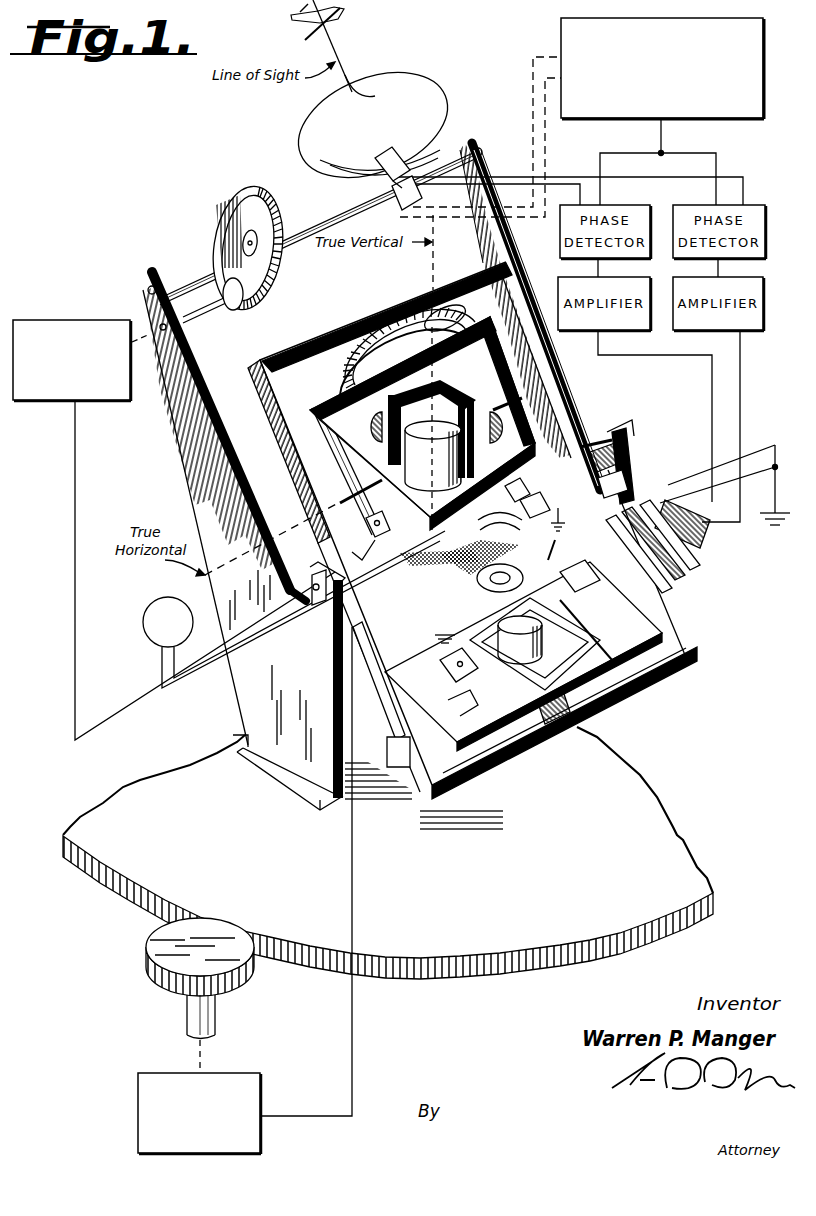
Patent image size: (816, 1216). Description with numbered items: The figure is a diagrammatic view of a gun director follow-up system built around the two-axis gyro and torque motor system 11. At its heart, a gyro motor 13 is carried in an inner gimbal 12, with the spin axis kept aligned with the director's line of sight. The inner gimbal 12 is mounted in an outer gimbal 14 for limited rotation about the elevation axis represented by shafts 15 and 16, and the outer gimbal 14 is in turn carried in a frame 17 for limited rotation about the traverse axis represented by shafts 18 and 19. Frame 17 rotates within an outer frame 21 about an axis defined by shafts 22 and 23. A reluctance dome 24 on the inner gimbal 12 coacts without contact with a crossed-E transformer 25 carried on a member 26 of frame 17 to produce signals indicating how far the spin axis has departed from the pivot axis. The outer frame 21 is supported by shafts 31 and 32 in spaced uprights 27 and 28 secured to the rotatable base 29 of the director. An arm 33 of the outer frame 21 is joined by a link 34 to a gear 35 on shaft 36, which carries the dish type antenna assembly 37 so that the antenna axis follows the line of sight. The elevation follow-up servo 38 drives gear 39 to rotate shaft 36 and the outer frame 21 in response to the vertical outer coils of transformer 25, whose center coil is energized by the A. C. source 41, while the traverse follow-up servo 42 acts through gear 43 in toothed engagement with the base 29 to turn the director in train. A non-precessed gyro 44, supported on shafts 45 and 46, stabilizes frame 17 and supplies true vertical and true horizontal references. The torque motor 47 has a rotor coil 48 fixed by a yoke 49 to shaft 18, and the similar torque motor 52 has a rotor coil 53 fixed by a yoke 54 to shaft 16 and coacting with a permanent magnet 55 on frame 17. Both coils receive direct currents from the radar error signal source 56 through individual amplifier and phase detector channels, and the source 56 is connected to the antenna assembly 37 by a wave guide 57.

The two-axis gyro and torque motor system 11 is at (645, 662).
The inner gimbal 12 is at (580, 649).
The gyro motor 13 is at (500, 638).
The outer gimbal 14 is at (596, 633).
The shaft 15 is at (475, 655).
The shaft 16 is at (588, 575).
The frame 17 is at (408, 614).
The shaft 18 is at (560, 560).
The shaft 19 is at (472, 704).
The outer frame 21 is at (298, 478).
The shaft 22 is at (378, 309).
The shaft 23 is at (545, 742).
The reluctance dome 24 is at (481, 553).
The crossed-E transformer 25 is at (532, 505).
The member 26 is at (522, 486).
The upright 27 is at (622, 430).
The upright 28 is at (245, 693).
The rotatable base 29 is at (168, 775).
The shaft 31 is at (314, 566).
The shaft 32 is at (636, 445).
The arm 33 is at (391, 523).
The link 34 is at (286, 330).
The gear 35 is at (284, 268).
The shaft 36 is at (320, 214).
The dish type antenna assembly 37 is at (302, 152).
The elevation follow-up servo 38 is at (80, 318).
The gear 39 is at (238, 310).
The A. C. source 41 is at (151, 600).
The traverse follow-up servo 42 is at (244, 1073).
The gear 43 is at (254, 978).
The non-precessed gyro 44 is at (463, 395).
The shaft 45 is at (372, 486).
The shaft 46 is at (486, 410).
The torque motor 47 is at (622, 463).
The rotor coil 48 is at (582, 446).
The yoke 49 is at (628, 480).
The torque motor 52 is at (683, 581).
The rotor coil 53 is at (704, 537).
The yoke 54 is at (680, 596).
The permanent magnet 55 is at (690, 566).
The radar error signal source 56 is at (560, 22).
The wave guide 57 is at (412, 196).